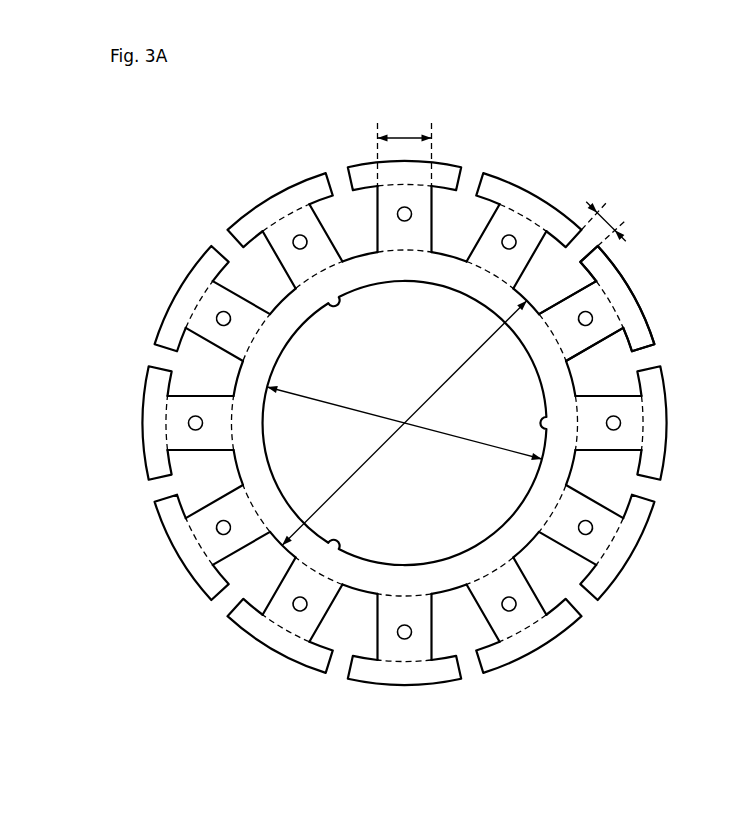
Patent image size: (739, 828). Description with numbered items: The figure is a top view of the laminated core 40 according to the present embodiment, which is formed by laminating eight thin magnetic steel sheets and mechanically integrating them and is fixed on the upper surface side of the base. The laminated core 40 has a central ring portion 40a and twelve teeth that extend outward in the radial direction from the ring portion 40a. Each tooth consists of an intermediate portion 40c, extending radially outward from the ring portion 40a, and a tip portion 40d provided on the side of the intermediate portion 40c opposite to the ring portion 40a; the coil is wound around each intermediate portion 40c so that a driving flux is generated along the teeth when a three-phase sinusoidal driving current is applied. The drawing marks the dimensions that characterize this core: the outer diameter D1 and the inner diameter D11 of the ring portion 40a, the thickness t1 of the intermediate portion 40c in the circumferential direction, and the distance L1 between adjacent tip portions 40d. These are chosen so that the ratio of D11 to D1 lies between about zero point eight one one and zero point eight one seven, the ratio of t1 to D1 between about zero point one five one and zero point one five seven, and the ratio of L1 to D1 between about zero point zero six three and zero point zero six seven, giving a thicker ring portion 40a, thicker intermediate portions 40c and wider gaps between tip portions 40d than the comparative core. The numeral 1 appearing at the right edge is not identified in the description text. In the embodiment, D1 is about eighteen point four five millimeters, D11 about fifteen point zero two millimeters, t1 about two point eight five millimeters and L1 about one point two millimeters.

The rotating electric machine 1 is at (733, 382).
The laminated core 40 is at (407, 451).
The ring portion 40a is at (626, 293).
The intermediate portion 40c is at (229, 298).
The tip portion 40d is at (283, 200).
The outer diameter of ring portion D1 is at (467, 360).
The inner diameter of ring portion D11 is at (458, 440).
The distance between adjacent tip portions L1 is at (610, 213).
The thickness of intermediate portion in circumferential direction t1 is at (409, 131).